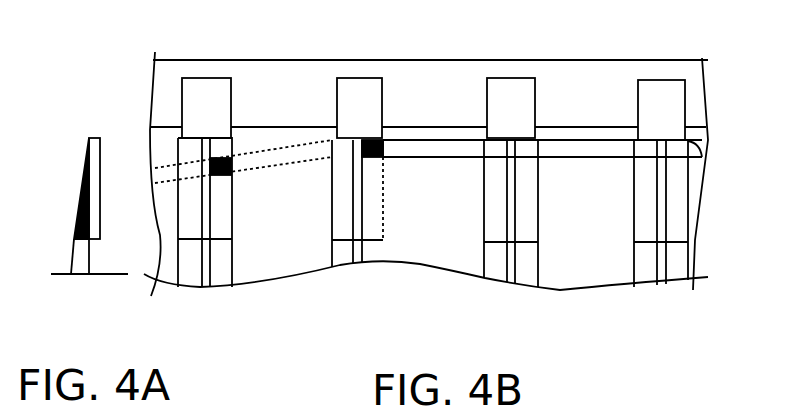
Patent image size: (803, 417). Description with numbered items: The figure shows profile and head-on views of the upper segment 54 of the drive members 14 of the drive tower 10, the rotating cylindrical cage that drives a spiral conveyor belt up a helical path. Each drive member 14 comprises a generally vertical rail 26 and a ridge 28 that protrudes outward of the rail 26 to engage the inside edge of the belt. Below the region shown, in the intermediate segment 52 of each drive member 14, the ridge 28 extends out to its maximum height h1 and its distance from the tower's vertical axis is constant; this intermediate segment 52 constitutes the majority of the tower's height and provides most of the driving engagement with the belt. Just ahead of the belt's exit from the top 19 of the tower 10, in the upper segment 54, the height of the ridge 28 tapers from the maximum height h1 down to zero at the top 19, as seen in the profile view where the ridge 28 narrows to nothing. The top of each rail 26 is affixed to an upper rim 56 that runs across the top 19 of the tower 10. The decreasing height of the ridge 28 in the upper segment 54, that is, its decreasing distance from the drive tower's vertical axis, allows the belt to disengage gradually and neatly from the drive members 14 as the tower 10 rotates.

In FIG. 4B, the drive tower 10 is at (293, 67).
In FIG. 4B, the top of the tower 19 is at (563, 62).
In FIG. 4B, the upper rim 56 is at (448, 66).
In FIG. 4B, the rail 26 is at (672, 105).
In FIG. 4B, the upper segment 54 is at (699, 193).
In FIG. 4B, the intermediate segment 52 is at (697, 243).
In FIG. 4B, the drive member 14 is at (640, 226).
In FIG. 4A, the ridge 28 is at (76, 206).
In FIG. 4A, the maximum height h1 is at (74, 266).